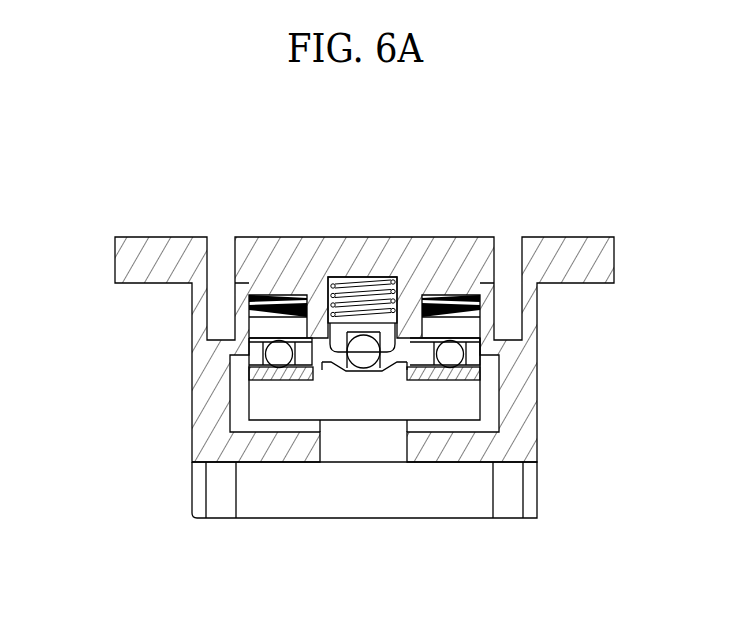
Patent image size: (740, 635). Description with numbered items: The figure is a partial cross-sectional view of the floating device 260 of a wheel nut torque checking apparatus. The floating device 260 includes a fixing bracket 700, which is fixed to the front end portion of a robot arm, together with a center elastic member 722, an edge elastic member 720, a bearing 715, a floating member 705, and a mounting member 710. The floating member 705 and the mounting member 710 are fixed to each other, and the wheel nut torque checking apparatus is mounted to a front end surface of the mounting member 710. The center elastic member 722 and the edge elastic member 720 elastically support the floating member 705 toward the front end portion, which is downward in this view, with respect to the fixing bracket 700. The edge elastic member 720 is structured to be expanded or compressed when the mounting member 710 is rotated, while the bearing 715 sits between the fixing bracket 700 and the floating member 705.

The floating device 260 is at (566, 508).
The fixing bracket 700 is at (130, 262).
The floating member 705 is at (270, 398).
The mounting member 710 is at (362, 495).
The bearing 715 is at (362, 353).
The edge elastic member 720 is at (452, 300).
The center elastic member 722 is at (357, 290).